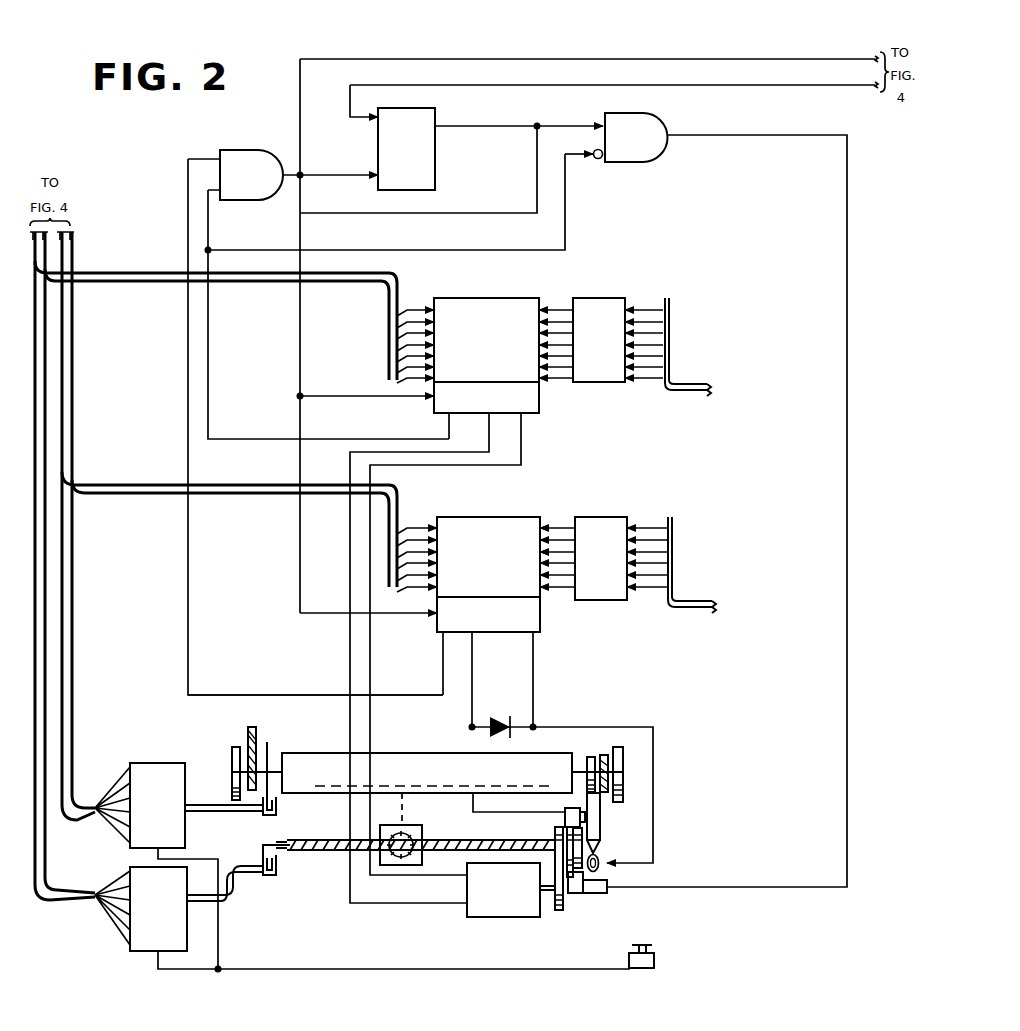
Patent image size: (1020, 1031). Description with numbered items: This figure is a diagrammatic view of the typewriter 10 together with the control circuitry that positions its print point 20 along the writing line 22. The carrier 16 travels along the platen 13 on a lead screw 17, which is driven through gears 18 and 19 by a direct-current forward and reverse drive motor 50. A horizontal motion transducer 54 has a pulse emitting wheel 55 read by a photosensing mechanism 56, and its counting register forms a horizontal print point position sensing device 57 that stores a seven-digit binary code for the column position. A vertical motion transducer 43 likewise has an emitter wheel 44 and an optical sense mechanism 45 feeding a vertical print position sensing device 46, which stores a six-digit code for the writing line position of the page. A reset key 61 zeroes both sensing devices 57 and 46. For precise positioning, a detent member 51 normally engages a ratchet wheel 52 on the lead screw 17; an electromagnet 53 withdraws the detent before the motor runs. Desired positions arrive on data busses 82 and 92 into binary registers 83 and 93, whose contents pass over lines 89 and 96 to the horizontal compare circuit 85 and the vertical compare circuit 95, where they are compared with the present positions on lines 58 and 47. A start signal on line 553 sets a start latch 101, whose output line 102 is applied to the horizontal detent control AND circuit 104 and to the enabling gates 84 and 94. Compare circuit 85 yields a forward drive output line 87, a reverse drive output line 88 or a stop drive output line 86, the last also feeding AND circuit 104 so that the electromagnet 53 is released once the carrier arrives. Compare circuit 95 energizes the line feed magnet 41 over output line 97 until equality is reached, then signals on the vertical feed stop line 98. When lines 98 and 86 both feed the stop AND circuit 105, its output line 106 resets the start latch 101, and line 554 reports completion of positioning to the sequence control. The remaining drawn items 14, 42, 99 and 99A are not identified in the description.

The completion signal line 554 is at (348, 58).
The start positioning signal line 553 is at (690, 85).
The stop AND circuit 105 is at (256, 149).
The reset output line 106 is at (343, 178).
The start latch 101 is at (436, 186).
The start output line 102 is at (449, 130).
The horizontal detent control AND circuit 104 is at (648, 163).
The horizontal position lines 58 is at (36, 257).
The vertical position lines 47 is at (72, 240).
The horizontal compare circuit 85 is at (456, 297).
The stop drive output line 86 is at (449, 425).
The forward drive output line 87 is at (489, 440).
The reverse drive output line 88 is at (521, 458).
The enabling gate 84 is at (540, 414).
The register output lines 89 is at (558, 380).
The binary register 83 is at (598, 383).
The data bus 82 is at (655, 382).
The vertical compare circuit 95 is at (478, 517).
The enabling gate 94 is at (434, 633).
The register output lines 96 is at (562, 590).
The binary register 93 is at (584, 517).
The data bus 92 is at (652, 518).
The vertical feed stop line 98 is at (316, 695).
The reverse output line 99 is at (473, 682).
The diode 99A is at (494, 713).
The line feed output line 97 is at (618, 727).
The print point 20 is at (400, 787).
The writing line 22 is at (437, 786).
The platen 13 is at (340, 794).
The typewriter 10 is at (216, 742).
The emitter wheel 44 is at (249, 730).
The vertical motion transducer 43 is at (274, 744).
The vertical print position sensing device 46 is at (132, 762).
The optical sense mechanism 45 is at (278, 811).
The horizontal print point position sensing device 57 is at (130, 950).
The photosensing mechanism 56 is at (268, 880).
The pulse emitting wheel 55 is at (266, 846).
The horizontal motion transducer 54 is at (250, 853).
The lead screw 17 is at (322, 855).
The carrier 16 is at (421, 828).
The drive motor 50 is at (503, 918).
The gear 18 is at (558, 910).
The detent member 51 is at (570, 890).
The gear 19 is at (553, 838).
The linkage 42 is at (564, 809).
The drive gear 14 is at (602, 755).
The line feed magnet 41 is at (600, 864).
The electro-magnet 53 is at (590, 895).
The ratchet wheel 52 is at (606, 890).
The reset key 61 is at (652, 947).